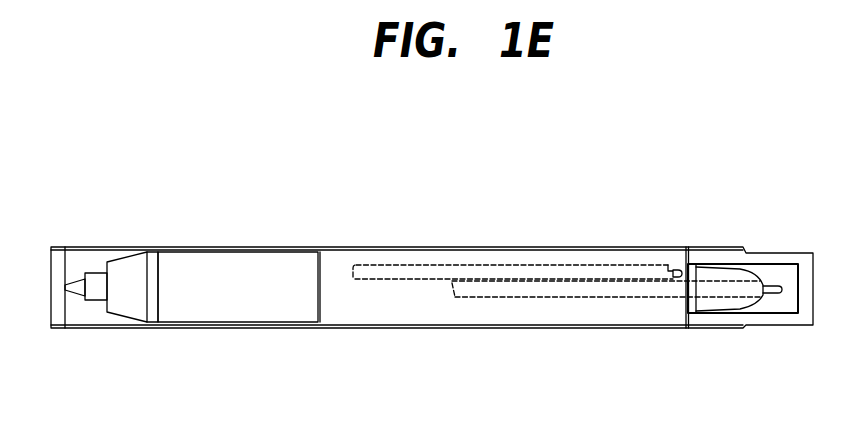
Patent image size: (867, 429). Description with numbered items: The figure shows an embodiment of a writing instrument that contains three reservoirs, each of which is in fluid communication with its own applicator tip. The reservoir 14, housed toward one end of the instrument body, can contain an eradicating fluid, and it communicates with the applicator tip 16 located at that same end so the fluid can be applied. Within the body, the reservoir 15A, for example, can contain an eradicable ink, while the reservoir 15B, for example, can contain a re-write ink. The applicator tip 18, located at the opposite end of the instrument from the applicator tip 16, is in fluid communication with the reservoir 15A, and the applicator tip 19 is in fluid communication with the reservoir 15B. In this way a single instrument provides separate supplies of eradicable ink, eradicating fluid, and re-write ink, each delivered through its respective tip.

The reservoir 14 is at (251, 285).
The applicator tip 16 is at (75, 281).
The reservoir 15A is at (575, 298).
The reservoir 15B is at (537, 267).
The applicator tip 18 is at (768, 284).
The applicator tip 19 is at (671, 270).